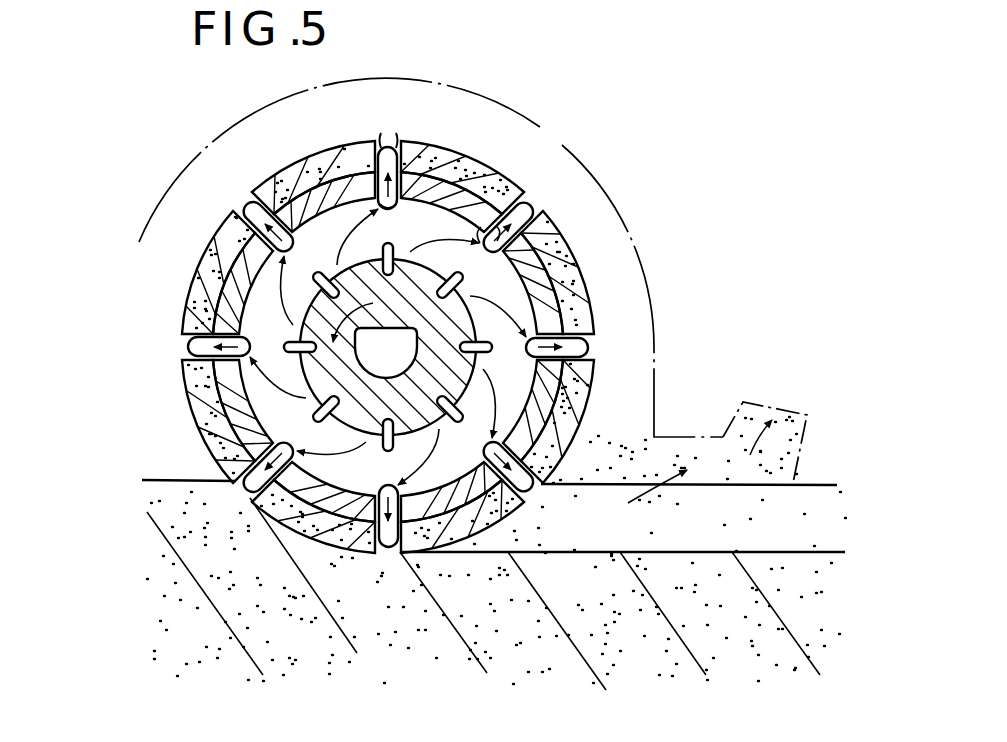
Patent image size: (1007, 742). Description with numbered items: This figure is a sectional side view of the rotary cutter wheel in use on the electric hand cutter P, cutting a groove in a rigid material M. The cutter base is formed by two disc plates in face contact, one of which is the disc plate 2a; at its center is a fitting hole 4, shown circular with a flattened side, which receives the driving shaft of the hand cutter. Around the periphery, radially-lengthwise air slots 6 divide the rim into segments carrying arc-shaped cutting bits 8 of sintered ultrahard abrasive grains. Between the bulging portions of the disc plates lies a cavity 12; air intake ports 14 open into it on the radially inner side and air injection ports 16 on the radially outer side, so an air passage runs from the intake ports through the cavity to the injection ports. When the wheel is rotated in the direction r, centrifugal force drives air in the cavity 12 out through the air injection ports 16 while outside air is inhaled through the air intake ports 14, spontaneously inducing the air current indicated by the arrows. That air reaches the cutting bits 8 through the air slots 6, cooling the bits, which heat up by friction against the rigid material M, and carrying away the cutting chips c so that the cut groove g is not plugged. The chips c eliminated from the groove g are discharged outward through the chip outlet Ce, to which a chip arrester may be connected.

The disc plate 2a is at (215, 300).
The fitting hole 4 is at (386, 353).
The air slots 6 is at (384, 141).
The cutting bits 8 is at (470, 166).
The cavity 12 is at (592, 389).
The air intake ports 14 is at (444, 296).
The air injection ports 16 is at (396, 204).
The electric hand cutter P is at (547, 131).
The chip outlet Ce is at (766, 403).
The cut groove g is at (775, 500).
The cutting chips c is at (622, 522).
The rigid material M is at (628, 645).
The direction of rotation r is at (361, 316).